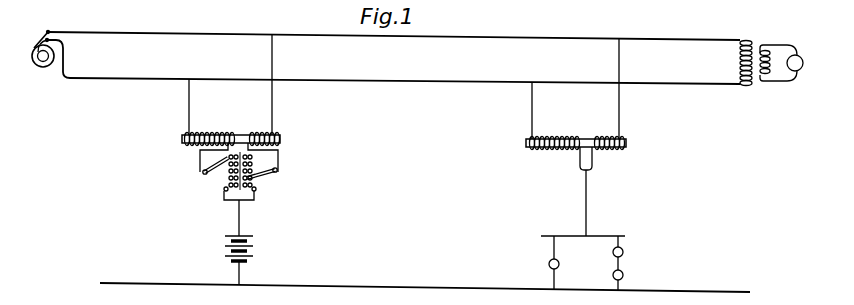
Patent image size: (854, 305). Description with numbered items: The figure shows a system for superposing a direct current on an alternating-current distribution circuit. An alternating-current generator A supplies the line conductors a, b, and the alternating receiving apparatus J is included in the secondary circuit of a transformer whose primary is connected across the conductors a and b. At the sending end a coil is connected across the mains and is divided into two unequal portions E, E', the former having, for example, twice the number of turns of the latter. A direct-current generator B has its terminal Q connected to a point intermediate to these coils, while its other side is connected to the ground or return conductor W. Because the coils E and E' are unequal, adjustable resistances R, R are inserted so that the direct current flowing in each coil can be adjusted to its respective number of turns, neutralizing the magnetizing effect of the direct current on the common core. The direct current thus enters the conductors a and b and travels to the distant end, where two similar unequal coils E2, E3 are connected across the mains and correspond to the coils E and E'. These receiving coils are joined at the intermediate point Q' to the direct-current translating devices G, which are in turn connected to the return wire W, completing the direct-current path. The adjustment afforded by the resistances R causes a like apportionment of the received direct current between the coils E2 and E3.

The line conductor a is at (394, 28).
The line conductor b is at (393, 62).
The alternating-current generator A is at (35, 60).
The coil portion E is at (231, 112).
The coil portion E' is at (265, 90).
The receiving coil E2 is at (576, 116).
The receiving coil E3 is at (610, 94).
The adjustable resistance R is at (238, 171).
The terminal Q is at (240, 194).
The direct-current generator B is at (246, 260).
The ground or return conductor W is at (425, 278).
The intermediate point Q' is at (595, 191).
The direct-current translating device G is at (584, 263).
The receiving apparatus J is at (771, 63).